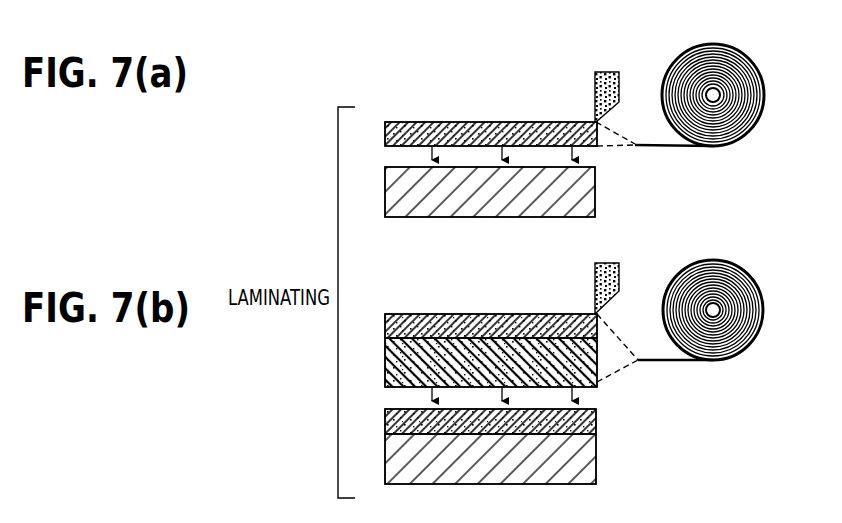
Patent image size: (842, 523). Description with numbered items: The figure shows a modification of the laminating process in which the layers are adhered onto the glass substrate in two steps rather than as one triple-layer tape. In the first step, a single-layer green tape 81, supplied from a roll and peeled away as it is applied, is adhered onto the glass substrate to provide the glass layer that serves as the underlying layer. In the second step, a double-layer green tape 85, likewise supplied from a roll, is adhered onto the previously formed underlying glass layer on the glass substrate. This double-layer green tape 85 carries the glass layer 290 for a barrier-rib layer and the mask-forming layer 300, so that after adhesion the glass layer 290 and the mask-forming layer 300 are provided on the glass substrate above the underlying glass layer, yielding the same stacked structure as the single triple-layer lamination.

The single-layer green tape 81 is at (742, 53).
The mask-forming layer 300 is at (521, 341).
The glass layer for a barrier-rib layer 290 is at (597, 372).
The double-layer green tape 85 is at (742, 269).